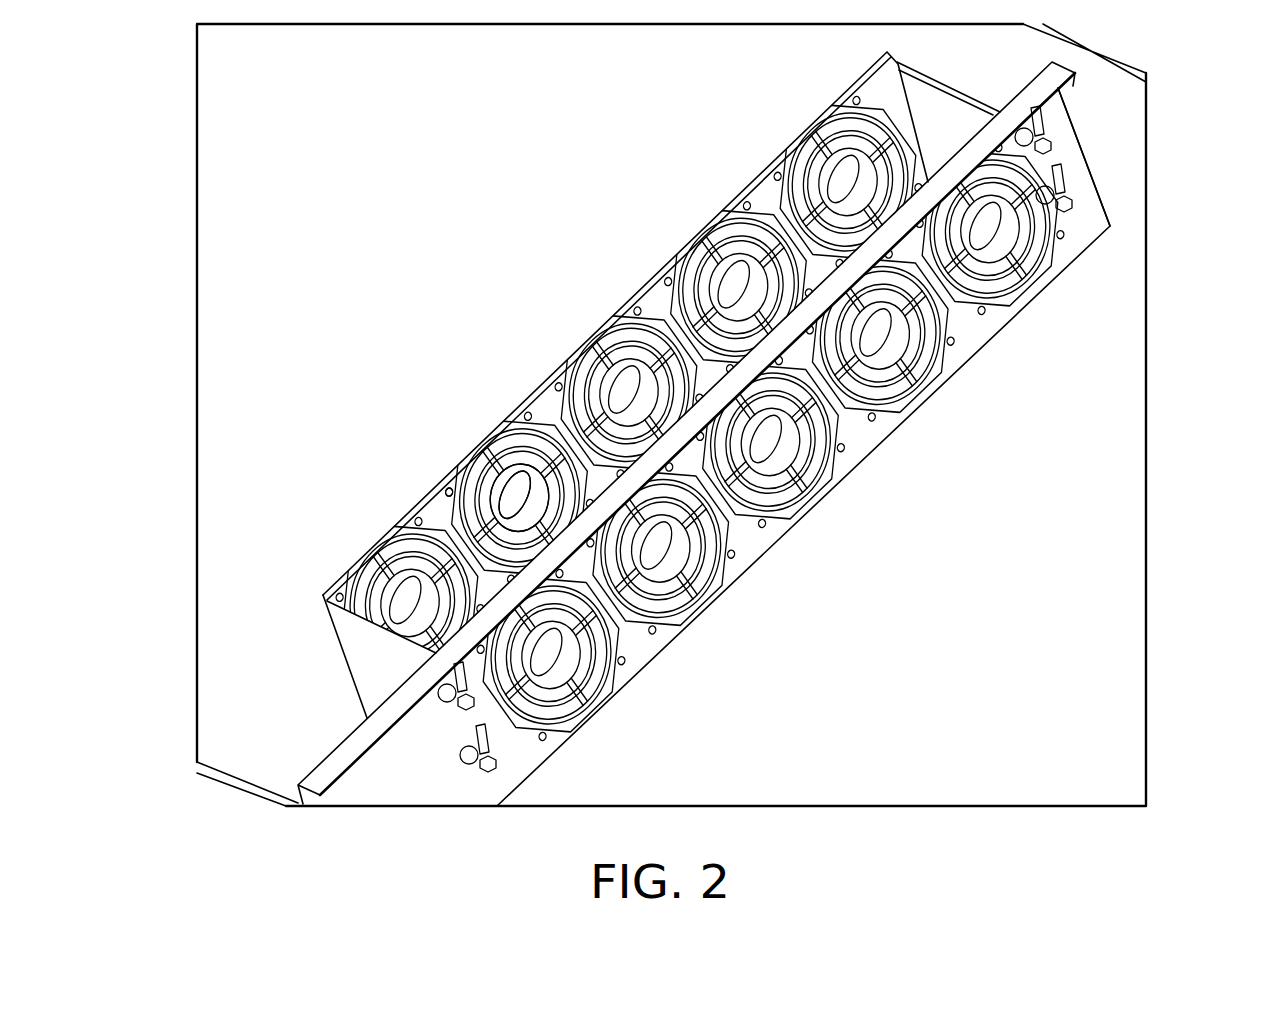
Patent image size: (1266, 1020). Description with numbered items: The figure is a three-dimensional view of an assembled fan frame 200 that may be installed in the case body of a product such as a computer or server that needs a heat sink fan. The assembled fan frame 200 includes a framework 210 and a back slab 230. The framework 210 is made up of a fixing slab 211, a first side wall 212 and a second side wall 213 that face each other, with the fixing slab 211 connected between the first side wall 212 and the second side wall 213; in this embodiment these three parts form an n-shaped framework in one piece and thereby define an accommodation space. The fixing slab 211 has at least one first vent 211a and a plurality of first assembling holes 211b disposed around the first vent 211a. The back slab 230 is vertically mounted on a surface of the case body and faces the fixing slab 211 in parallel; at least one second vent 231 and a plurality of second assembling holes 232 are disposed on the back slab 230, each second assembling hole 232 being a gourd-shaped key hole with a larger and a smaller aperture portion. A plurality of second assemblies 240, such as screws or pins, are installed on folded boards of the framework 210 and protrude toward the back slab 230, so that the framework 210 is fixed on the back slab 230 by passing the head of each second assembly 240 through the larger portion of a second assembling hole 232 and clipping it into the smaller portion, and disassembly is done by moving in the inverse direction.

The assembled fan frame 200 is at (1246, 330).
The framework 210 is at (380, 525).
The fixing slab 211 is at (585, 333).
The first vent 211a is at (516, 494).
The first assembling holes 211b is at (450, 487).
The first side wall 212 is at (372, 644).
The second side wall 213 is at (957, 88).
The back slab 230 is at (1088, 225).
The second vent 231 is at (994, 222).
The second assembling holes 232 is at (1060, 170).
The second assemblies 240 is at (1073, 209).